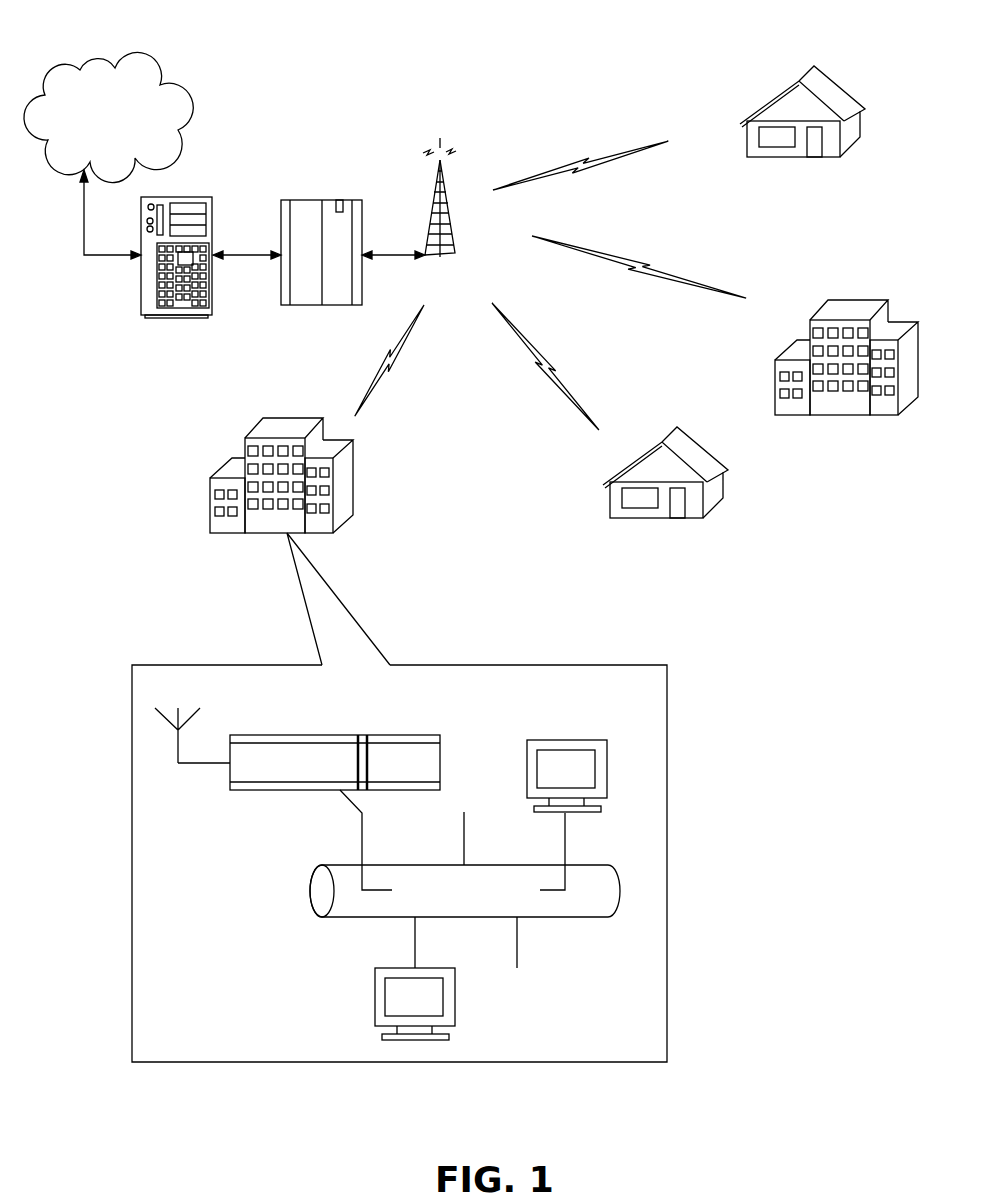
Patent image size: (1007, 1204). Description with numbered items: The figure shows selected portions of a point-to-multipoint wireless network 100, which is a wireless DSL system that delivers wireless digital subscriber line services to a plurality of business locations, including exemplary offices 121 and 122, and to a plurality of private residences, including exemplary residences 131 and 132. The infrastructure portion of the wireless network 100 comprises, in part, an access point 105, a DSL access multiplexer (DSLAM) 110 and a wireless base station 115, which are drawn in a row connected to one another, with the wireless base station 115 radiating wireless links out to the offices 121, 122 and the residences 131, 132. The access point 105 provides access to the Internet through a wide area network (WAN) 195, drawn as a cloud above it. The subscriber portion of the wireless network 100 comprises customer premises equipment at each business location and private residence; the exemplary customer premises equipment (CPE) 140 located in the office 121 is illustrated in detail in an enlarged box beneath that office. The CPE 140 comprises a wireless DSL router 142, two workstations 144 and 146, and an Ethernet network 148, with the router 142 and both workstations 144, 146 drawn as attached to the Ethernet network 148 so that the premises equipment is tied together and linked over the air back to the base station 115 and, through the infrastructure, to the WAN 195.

The point-to-multipoint wireless network 100 is at (803, 732).
The access point 105 is at (178, 318).
The DSL access multiplexer (DSLAM) 110 is at (317, 200).
The wireless base station 115 is at (440, 258).
The office 121 is at (290, 418).
The office 122 is at (853, 300).
The residence 131 is at (790, 158).
The residence 132 is at (657, 520).
The customer premises equipment (CPE) 140 is at (668, 852).
The wireless DSL router 142 is at (334, 735).
The workstation 144 is at (375, 1000).
The workstation 146 is at (565, 740).
The Ethernet network 148 is at (310, 891).
The wide area network (WAN) 195 is at (128, 57).